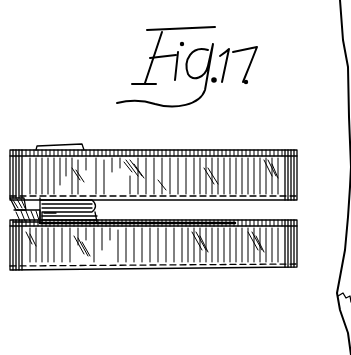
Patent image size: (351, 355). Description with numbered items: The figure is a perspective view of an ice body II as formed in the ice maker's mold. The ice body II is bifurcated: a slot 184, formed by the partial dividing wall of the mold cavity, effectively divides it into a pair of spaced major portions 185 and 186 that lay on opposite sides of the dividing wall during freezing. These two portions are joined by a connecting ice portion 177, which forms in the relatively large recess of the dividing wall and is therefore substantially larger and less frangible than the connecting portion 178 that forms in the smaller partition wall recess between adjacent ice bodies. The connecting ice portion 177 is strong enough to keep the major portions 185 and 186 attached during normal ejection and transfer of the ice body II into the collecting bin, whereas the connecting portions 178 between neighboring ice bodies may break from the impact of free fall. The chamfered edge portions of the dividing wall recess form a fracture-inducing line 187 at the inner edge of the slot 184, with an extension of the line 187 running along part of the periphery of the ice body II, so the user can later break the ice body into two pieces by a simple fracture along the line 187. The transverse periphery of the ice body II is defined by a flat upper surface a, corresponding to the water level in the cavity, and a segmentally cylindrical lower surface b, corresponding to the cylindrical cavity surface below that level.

The connecting portion of ice 178 is at (68, 148).
The connecting ice portion 177 is at (88, 212).
The flat upper surface a is at (124, 180).
The major portion 186 is at (205, 164).
The ice body II is at (297, 168).
The fracture-inducing line 187 is at (55, 214).
The segmentally cylindrical lower surface b is at (162, 188).
The major portion 185 is at (192, 254).
The slot 184 is at (212, 224).